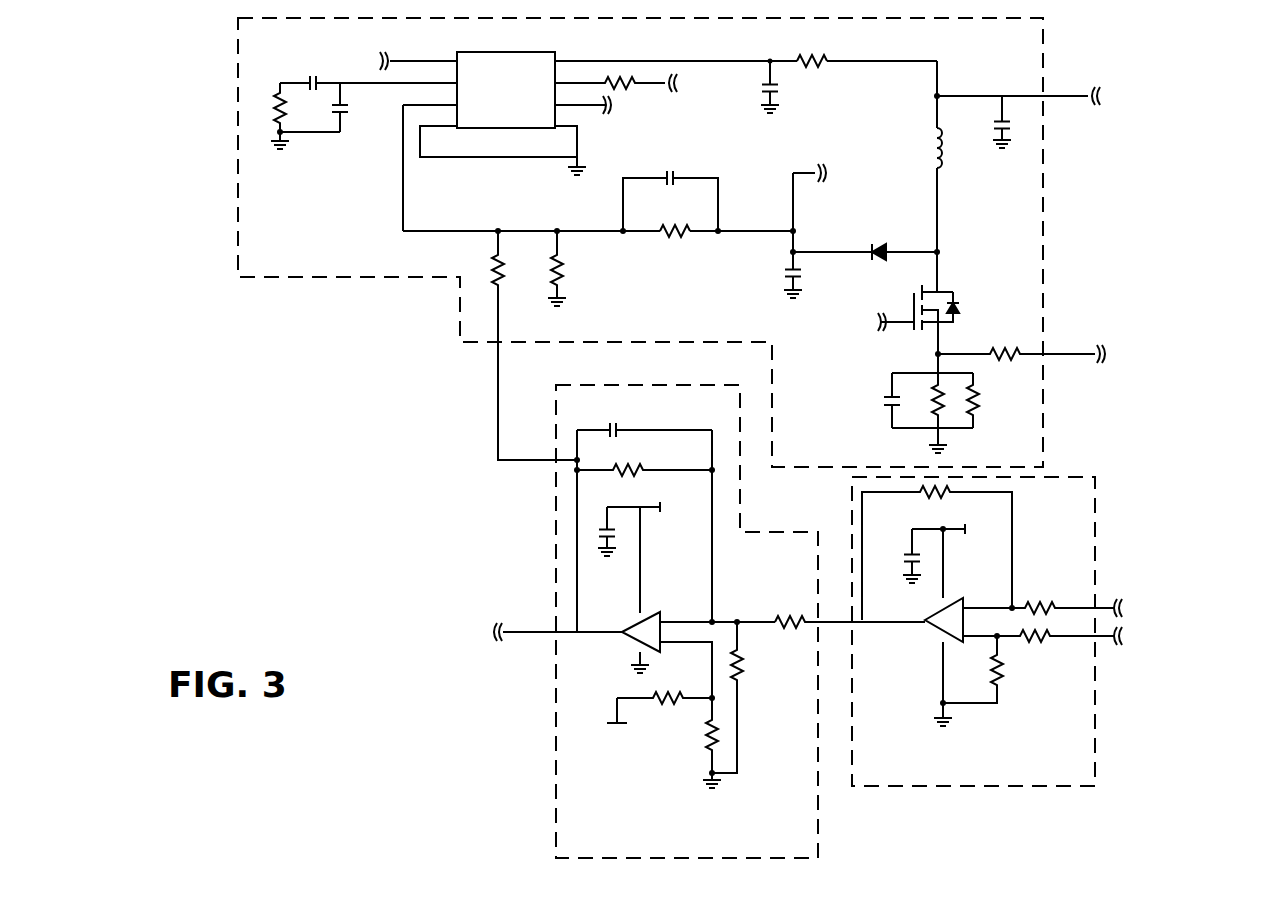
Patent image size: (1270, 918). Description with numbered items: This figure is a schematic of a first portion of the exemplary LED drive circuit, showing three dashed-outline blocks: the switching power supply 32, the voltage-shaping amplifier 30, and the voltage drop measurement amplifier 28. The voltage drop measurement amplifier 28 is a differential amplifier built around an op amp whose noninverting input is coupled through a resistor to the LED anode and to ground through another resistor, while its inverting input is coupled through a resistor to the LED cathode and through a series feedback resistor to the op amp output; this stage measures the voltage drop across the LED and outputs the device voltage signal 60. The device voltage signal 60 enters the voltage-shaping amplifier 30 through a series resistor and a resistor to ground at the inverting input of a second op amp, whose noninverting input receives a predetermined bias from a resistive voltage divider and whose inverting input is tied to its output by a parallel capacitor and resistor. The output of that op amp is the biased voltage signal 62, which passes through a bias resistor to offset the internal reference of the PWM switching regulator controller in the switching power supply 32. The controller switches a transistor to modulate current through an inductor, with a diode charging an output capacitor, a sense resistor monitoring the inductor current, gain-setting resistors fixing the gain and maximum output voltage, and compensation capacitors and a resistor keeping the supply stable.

The switching power supply 32 is at (237, 222).
The voltage-shaping amplifier 30 is at (556, 752).
The biased voltage signal 62 is at (577, 572).
The device voltage signal 60 is at (831, 622).
The voltage drop measurement amplifier 28 is at (1095, 548).